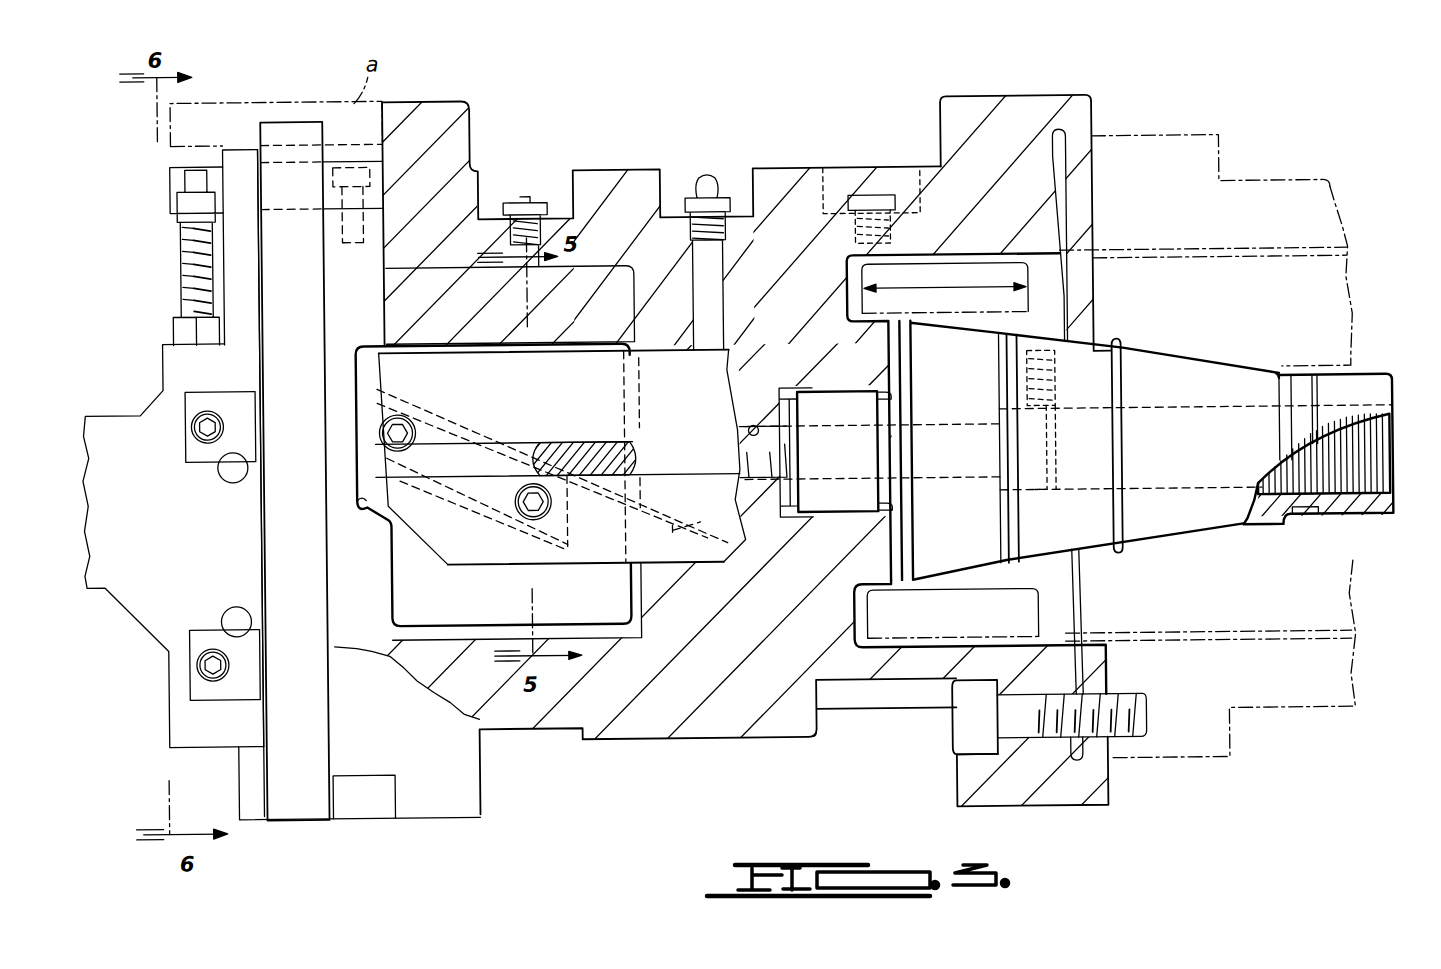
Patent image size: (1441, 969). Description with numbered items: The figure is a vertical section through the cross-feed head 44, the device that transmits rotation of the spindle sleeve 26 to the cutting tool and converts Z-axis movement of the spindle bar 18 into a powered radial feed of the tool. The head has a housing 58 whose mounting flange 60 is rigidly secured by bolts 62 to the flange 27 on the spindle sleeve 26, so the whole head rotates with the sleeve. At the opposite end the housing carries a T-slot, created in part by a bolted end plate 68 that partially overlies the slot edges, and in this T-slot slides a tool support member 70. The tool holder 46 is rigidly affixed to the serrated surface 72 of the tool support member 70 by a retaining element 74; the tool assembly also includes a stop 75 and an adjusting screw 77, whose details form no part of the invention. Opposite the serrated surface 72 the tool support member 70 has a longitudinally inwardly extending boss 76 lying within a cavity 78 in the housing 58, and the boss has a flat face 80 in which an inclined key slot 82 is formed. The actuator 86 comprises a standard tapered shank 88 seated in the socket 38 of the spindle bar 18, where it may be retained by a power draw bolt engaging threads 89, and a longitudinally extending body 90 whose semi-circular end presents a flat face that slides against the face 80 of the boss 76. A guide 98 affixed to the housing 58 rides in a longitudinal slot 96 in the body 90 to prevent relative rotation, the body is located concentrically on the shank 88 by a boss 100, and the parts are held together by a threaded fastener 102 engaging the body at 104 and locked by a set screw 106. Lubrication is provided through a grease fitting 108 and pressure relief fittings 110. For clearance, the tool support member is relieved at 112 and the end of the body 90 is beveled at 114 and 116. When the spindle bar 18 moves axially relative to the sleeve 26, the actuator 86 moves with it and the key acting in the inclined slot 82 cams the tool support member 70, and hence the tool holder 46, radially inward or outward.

The spindle bar 18 is at (1349, 247).
The spindle sleeve 26 is at (1328, 189).
The flange 27 is at (1174, 141).
The socket 38 is at (1213, 372).
The cross-feed head 44 is at (818, 152).
The tool holder 46 is at (162, 498).
The housing 58 is at (615, 180).
The mounting flange 60 is at (1022, 810).
The bolts 62 is at (1124, 704).
The end plate 68 is at (308, 409).
The tool support member 70 is at (364, 302).
The serrated surface 72 is at (261, 528).
The retaining element 74 is at (253, 812).
The stop 75 is at (246, 200).
The boss 76 is at (563, 342).
The adjusting screw 77 is at (184, 257).
The cavity 78 is at (438, 270).
The flat face 80 is at (398, 592).
The inclined key slot 82 is at (428, 414).
The actuator 86 is at (700, 408).
The tapered shank 88 is at (1197, 537).
The threads 89 is at (1375, 526).
The body 90 is at (498, 563).
The slot 96 is at (684, 468).
The guide 98 is at (572, 443).
The boss 100 is at (872, 457).
The threaded fastener 102 is at (1034, 503).
The threaded engagement 104 is at (755, 426).
The set screw 106 is at (1012, 381).
The grease fitting 108 is at (712, 178).
The pressure relief fittings 110 is at (531, 197).
The relief 112 is at (367, 512).
The bevel 114 is at (418, 541).
The bevel 116 is at (690, 522).